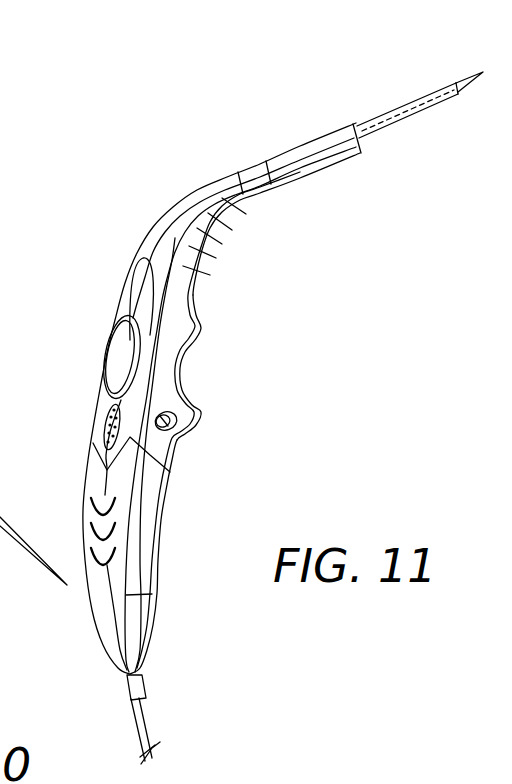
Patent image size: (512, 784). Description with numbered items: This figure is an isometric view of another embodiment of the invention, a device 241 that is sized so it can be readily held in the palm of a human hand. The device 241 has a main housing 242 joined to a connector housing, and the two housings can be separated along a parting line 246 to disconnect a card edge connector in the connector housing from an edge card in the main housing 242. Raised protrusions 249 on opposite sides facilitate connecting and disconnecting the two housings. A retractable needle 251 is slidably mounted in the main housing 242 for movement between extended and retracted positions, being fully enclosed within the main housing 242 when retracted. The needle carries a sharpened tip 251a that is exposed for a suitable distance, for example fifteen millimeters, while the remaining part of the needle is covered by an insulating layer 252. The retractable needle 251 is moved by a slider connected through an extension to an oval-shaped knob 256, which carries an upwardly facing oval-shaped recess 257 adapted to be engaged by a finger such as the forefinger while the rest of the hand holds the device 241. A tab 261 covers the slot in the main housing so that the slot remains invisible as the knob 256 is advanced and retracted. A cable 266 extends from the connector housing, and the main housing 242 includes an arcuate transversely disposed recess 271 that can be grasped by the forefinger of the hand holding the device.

The device 241 is at (102, 192).
The main housing 242 is at (204, 254).
The parting line 246 is at (170, 458).
The raised protrusions 249 is at (177, 430).
The retractable needle 251 is at (412, 100).
The sharpened tip 251a is at (474, 90).
The insulating layer 252 is at (408, 118).
The oval-shaped knob 256 is at (133, 338).
The oval-shaped recess 257 is at (118, 350).
The tab 261 is at (103, 417).
The cable 266 is at (147, 727).
The arcuate transversely disposed recess 271 is at (183, 372).